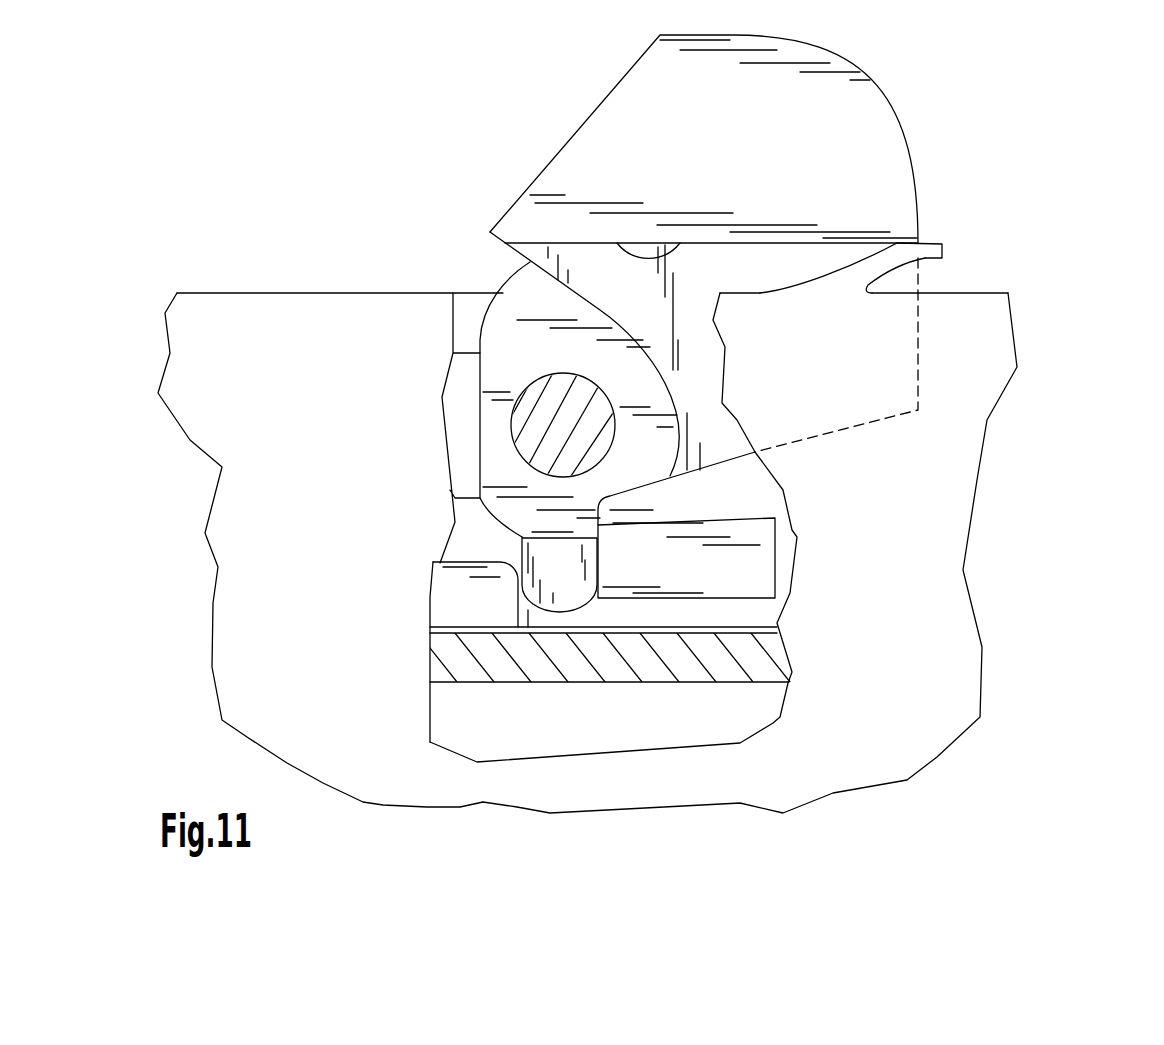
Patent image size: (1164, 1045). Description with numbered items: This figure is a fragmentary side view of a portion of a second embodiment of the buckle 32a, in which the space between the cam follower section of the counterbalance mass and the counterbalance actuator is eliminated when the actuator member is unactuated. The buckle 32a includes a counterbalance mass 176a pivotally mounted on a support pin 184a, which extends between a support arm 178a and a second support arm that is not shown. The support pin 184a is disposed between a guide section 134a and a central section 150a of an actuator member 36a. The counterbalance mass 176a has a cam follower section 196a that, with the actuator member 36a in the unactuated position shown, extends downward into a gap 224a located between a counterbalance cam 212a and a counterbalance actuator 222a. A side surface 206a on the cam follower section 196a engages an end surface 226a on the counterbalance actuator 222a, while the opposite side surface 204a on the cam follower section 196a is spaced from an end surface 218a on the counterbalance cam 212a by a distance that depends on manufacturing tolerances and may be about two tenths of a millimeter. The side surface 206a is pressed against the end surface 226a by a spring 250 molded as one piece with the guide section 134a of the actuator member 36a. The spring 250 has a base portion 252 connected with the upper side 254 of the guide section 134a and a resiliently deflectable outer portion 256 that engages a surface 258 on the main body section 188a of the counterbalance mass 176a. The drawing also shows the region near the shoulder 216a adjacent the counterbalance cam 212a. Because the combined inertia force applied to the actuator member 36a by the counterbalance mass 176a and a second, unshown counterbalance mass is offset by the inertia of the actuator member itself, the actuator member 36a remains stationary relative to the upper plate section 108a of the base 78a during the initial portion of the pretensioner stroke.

The buckle 32a is at (367, 130).
The actuator member 36a is at (200, 292).
The guide section 134a is at (312, 330).
The central section 150a is at (483, 293).
The counterbalance mass 176a is at (890, 97).
The main body section 188a is at (843, 145).
The surface 258 is at (683, 243).
The base portion 252 is at (832, 287).
The outer portion 256 is at (923, 247).
The spring 250 is at (945, 248).
The upper side 254 is at (977, 292).
The support arm 178a is at (455, 398).
The support pin 184a is at (545, 428).
The side surface 204a is at (485, 537).
The shoulder 216a is at (465, 562).
The counterbalance cam 212a is at (427, 598).
The end surface 218a is at (430, 680).
The gap 224a is at (520, 612).
The cam follower section 196a is at (563, 587).
The side surface 206a is at (597, 570).
The end surface 226a is at (607, 530).
The counterbalance actuator 222a is at (778, 540).
The base 78a is at (790, 647).
The upper plate section 108a is at (737, 655).